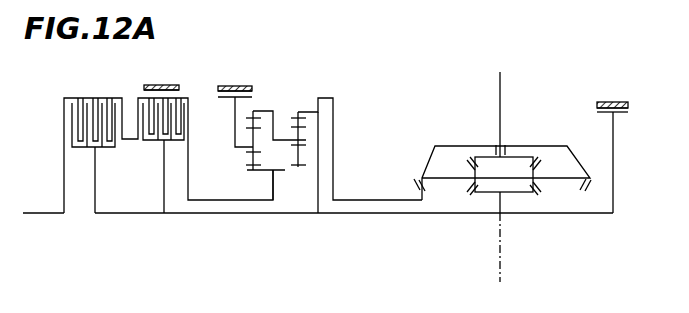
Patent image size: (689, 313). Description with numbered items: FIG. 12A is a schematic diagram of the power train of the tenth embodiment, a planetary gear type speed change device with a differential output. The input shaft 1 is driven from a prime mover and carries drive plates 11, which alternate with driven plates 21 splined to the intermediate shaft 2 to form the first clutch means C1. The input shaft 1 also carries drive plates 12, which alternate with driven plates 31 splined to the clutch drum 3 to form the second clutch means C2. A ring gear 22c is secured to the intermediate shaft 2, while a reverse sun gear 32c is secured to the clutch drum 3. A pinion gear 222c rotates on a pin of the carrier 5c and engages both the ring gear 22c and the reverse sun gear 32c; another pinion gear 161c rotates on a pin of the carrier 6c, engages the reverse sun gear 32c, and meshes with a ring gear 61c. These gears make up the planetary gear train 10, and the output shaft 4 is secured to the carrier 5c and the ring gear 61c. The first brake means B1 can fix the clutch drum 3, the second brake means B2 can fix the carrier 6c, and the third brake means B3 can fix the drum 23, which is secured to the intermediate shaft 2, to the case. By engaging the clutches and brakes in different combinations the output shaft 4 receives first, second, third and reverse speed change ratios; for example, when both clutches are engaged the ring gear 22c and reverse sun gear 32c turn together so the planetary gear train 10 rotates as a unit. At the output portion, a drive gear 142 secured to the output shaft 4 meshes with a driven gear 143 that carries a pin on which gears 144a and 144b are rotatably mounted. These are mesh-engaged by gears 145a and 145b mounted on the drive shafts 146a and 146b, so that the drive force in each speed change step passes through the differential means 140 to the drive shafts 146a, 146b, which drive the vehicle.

The input shaft 1 is at (40, 213).
The clutch drum 3 is at (193, 101).
The first clutch means C1 is at (81, 150).
The drive plates 11 is at (92, 108).
The driven plates 21 is at (104, 145).
The second clutch means C2 is at (143, 143).
The driven plates 31 is at (147, 103).
The drive plates 12 is at (162, 143).
The first brake means B1 is at (163, 83).
The second brake means B2 is at (235, 84).
The third brake means B3 is at (610, 100).
The pinion gear 161c is at (235, 136).
The carrier 6c is at (234, 102).
The ring gear 61c is at (248, 113).
The carrier 5c is at (274, 111).
The pinion gear 222c is at (304, 134).
The ring gear 22c is at (309, 112).
The planetary gear train 10 is at (282, 158).
The reverse sun gear 32c is at (273, 199).
The output shaft 4 is at (367, 200).
The intermediate shaft 2 is at (398, 214).
The driven gear 143 is at (429, 158).
The drive gear 142 is at (424, 198).
The differential means 140 is at (503, 167).
The gear 144b is at (452, 168).
The gear 144a is at (544, 170).
The gear 145a is at (529, 156).
The gear 145b is at (508, 194).
The drive shaft 146a is at (502, 94).
The drive shaft 146b is at (502, 264).
The drum 23 is at (618, 113).